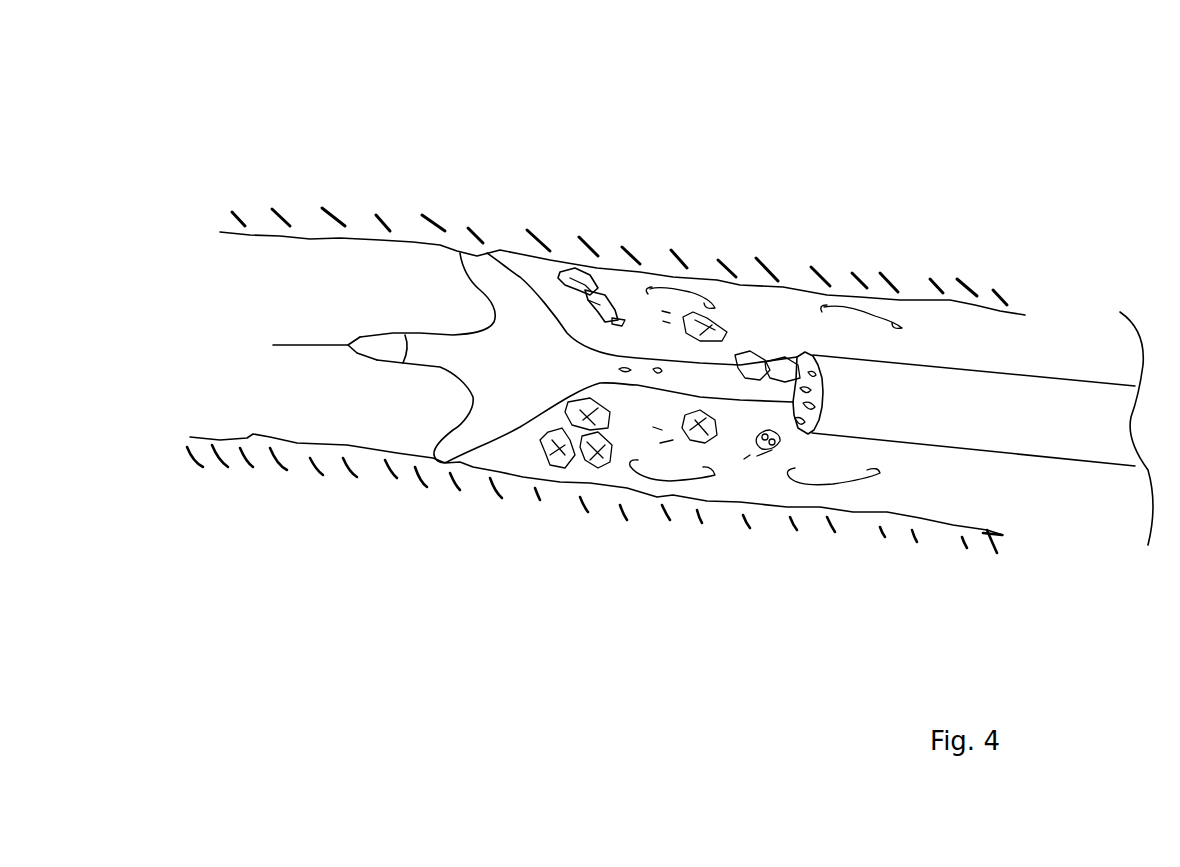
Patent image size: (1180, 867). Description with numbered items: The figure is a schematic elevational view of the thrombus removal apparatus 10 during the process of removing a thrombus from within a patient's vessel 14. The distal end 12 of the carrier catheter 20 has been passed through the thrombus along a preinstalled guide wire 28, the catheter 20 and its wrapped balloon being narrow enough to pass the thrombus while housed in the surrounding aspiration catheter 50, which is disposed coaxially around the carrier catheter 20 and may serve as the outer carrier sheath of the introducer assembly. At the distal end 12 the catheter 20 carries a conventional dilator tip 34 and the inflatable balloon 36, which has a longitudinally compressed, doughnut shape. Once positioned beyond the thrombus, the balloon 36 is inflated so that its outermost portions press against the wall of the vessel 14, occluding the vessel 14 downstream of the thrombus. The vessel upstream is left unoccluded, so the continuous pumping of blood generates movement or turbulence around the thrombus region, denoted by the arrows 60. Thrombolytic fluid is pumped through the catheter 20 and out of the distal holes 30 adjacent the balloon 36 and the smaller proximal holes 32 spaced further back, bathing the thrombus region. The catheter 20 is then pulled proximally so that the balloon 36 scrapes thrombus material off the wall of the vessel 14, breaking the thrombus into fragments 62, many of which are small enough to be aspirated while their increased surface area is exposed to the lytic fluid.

The thrombus removal apparatus 10 is at (850, 124).
The distal end 12 is at (402, 162).
The vessel 14 is at (951, 300).
The carrier catheter 20 is at (720, 357).
The guide wire 28 is at (312, 347).
The distal holes 30 is at (636, 362).
The proximal holes 32 is at (793, 400).
The dilator tip 34 is at (386, 327).
The inflatable balloon 36 is at (478, 263).
The aspiration catheter 50 is at (1043, 387).
The arrows 60 is at (687, 277).
The thrombus fragments 62 is at (603, 262).